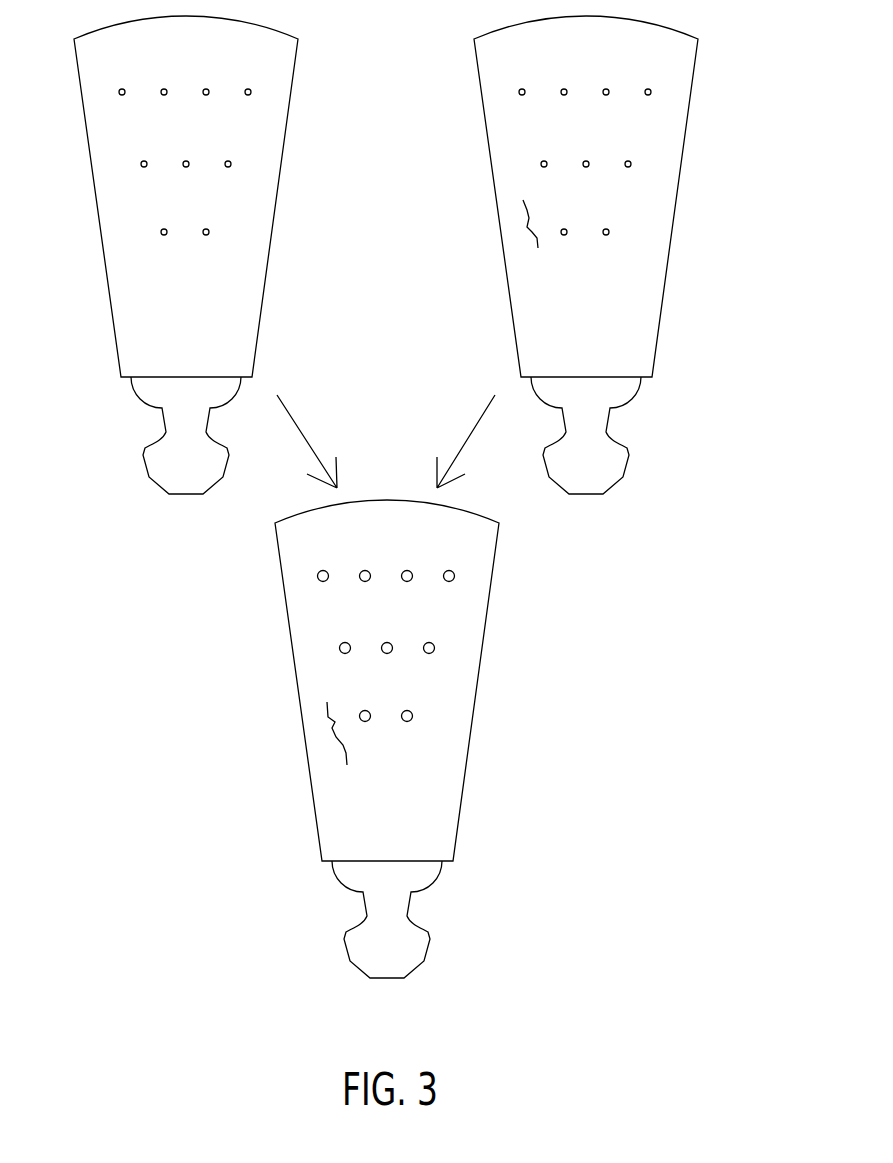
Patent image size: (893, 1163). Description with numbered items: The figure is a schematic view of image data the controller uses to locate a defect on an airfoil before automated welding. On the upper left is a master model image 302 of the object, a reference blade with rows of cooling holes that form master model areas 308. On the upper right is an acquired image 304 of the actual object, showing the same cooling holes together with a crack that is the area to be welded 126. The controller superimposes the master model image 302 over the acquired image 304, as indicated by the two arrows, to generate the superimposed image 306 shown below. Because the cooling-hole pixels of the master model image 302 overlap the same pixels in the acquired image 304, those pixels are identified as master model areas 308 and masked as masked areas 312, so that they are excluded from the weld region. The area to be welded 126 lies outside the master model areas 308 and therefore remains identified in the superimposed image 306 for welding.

The area to be welded 126 is at (527, 228).
The master model image 302 is at (197, 377).
The acquired image 304 is at (597, 377).
The superimposed image 306 is at (398, 861).
The master model areas 308 is at (233, 160).
The masked areas 312 is at (437, 643).